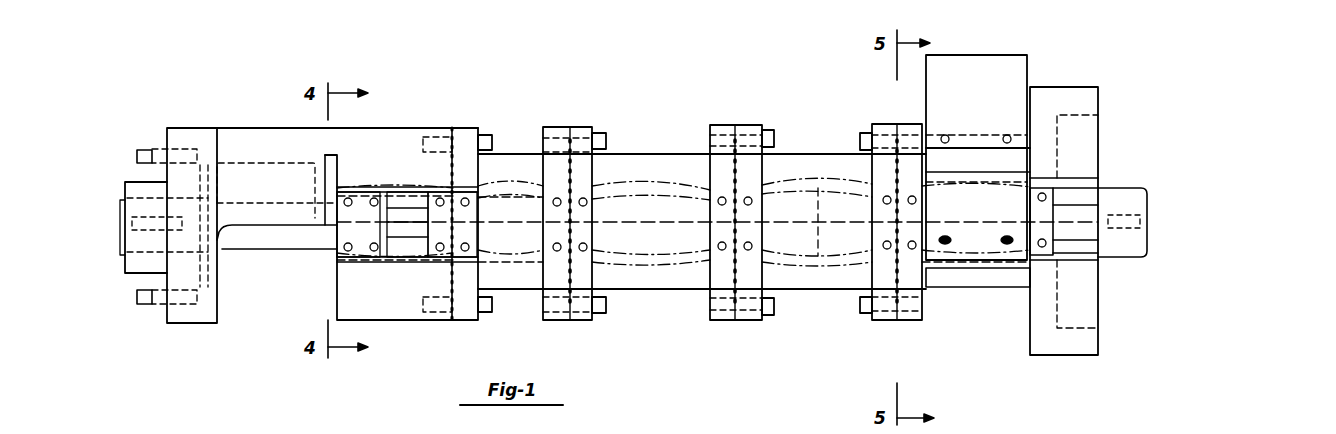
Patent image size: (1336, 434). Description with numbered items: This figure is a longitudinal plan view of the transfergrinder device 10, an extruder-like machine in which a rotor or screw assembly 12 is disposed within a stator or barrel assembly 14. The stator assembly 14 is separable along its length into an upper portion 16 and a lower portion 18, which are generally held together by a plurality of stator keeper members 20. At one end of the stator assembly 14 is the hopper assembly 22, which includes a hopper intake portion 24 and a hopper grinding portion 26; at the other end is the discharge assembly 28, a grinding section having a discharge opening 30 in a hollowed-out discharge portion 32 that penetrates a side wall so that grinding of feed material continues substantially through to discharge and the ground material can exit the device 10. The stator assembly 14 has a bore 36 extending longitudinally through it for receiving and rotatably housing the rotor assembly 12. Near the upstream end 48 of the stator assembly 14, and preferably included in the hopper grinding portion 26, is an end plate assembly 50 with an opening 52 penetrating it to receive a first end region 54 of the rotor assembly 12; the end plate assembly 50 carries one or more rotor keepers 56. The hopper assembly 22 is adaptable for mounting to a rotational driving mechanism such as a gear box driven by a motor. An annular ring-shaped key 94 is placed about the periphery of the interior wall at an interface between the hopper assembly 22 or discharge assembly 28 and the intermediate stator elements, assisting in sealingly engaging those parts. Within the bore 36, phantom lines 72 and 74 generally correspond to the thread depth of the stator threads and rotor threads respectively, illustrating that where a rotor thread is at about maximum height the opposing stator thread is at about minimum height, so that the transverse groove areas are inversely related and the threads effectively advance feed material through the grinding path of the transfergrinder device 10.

The transfergrinder device 10 is at (1235, 150).
The rotor assembly 12 is at (648, 208).
The stator assembly 14 is at (628, 167).
The upper portion 16 is at (1072, 162).
The lower portion 18 is at (1072, 285).
The stator keeper members 20 is at (592, 231).
The hopper assembly 22 is at (996, 90).
The hopper intake portion 24 is at (940, 80).
The hopper grinding portion 26 is at (958, 278).
The discharge assembly 28 is at (375, 292).
The discharge opening 30 is at (337, 250).
The hollowed-out discharge portion 32 is at (262, 278).
The bore 36 is at (148, 197).
The upstream end 48 is at (1043, 358).
The end plate assembly 50 is at (1074, 347).
The opening 52 is at (1098, 178).
The first end region 54 is at (1115, 243).
The rotor keepers 56 is at (1038, 230).
The phantom lines 72 is at (513, 183).
The phantom lines 74 is at (490, 188).
The annular ring-shaped key 94 is at (897, 280).